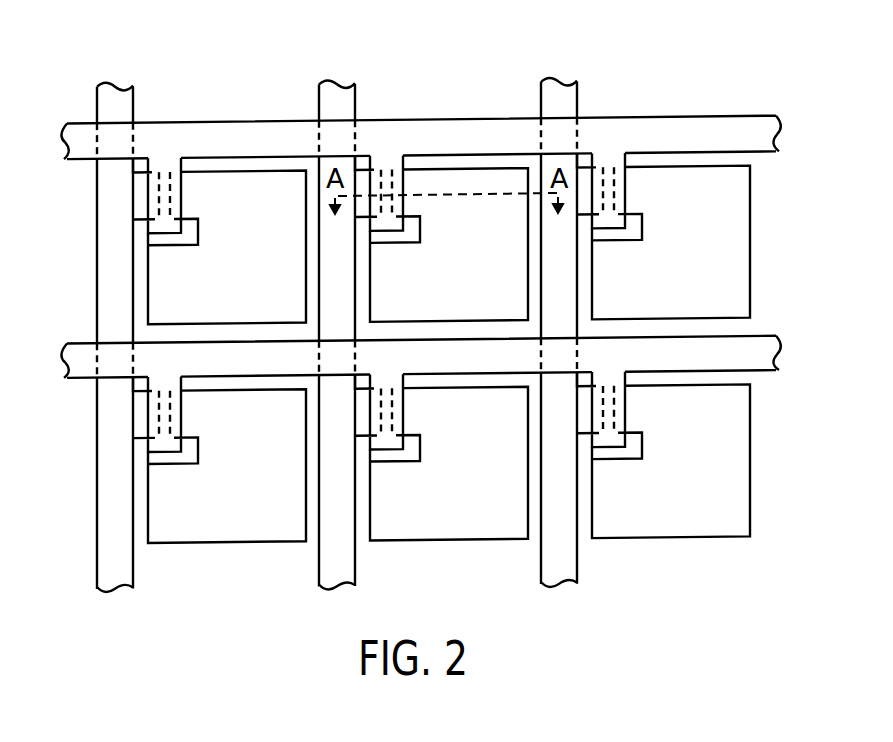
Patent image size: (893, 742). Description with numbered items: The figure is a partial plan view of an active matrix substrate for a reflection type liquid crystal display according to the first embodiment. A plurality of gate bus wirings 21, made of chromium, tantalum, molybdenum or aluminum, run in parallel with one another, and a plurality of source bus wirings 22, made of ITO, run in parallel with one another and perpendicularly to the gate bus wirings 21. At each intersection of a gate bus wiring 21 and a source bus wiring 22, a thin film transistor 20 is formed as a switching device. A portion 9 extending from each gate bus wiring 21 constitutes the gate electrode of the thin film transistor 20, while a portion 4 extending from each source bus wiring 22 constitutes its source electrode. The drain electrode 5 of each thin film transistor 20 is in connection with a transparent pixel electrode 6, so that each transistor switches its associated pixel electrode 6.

The source electrode 4 is at (597, 185).
The drain electrode 5 is at (618, 199).
The transparent pixel electrode 6 is at (723, 278).
The gate electrode 9 is at (622, 220).
The thin film transistor 20 is at (388, 170).
The gate bus wiring 21 is at (727, 134).
The source bus wiring 22 is at (118, 576).